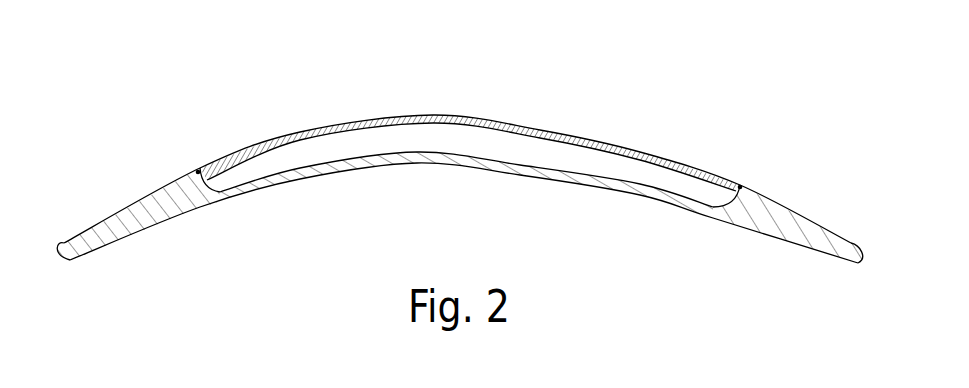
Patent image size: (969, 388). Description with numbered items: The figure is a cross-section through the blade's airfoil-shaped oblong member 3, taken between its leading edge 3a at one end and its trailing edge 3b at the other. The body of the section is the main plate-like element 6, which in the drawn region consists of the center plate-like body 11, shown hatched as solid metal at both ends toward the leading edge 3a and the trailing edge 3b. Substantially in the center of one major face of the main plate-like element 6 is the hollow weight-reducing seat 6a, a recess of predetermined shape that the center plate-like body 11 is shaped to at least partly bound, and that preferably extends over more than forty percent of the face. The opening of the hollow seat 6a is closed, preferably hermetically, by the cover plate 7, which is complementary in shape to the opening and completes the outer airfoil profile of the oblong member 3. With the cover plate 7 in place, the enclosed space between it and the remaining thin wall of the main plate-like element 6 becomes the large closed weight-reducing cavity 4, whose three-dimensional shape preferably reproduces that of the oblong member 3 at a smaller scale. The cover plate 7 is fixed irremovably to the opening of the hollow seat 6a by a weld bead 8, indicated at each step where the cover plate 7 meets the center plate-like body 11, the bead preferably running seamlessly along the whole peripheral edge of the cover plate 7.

The airfoil-shaped oblong member 3 is at (459, 192).
The leading edge 3a is at (48, 260).
The trailing edge 3b is at (870, 261).
The weight-reducing cavity 4 is at (458, 137).
The main plate-like element 6 is at (347, 178).
The hollow weight-reducing seat 6a is at (214, 180).
The cover plate 7 is at (332, 129).
The weld bead 8 is at (197, 171).
The center plate-like body 11 is at (519, 170).